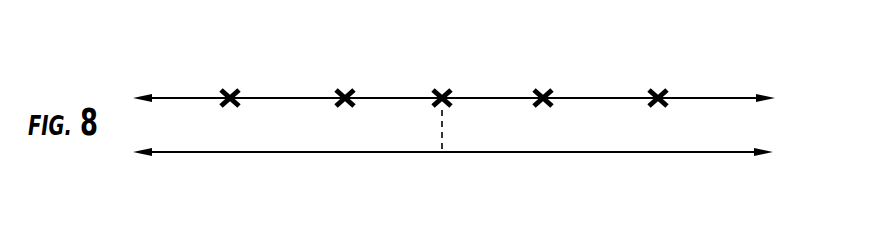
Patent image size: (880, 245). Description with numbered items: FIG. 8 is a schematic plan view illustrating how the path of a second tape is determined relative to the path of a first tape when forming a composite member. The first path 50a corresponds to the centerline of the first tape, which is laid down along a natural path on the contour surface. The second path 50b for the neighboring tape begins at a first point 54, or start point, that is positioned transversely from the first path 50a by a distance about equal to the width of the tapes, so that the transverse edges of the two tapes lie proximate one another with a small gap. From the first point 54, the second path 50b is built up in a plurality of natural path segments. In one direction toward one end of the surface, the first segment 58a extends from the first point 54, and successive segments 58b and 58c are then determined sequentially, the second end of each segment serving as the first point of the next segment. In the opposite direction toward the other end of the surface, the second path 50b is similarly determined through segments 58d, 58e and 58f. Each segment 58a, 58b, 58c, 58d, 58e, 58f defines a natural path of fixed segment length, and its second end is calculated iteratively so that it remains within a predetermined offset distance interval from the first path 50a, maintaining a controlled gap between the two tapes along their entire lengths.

The first path 50a is at (230, 153).
The second path 50b is at (784, 97).
The first point 54 is at (443, 89).
The first segment 58a is at (500, 97).
The second segment 58b is at (603, 97).
The third segment 58c is at (712, 97).
The segment 58d is at (397, 97).
The segment 58e is at (297, 97).
The segment 58f is at (198, 97).